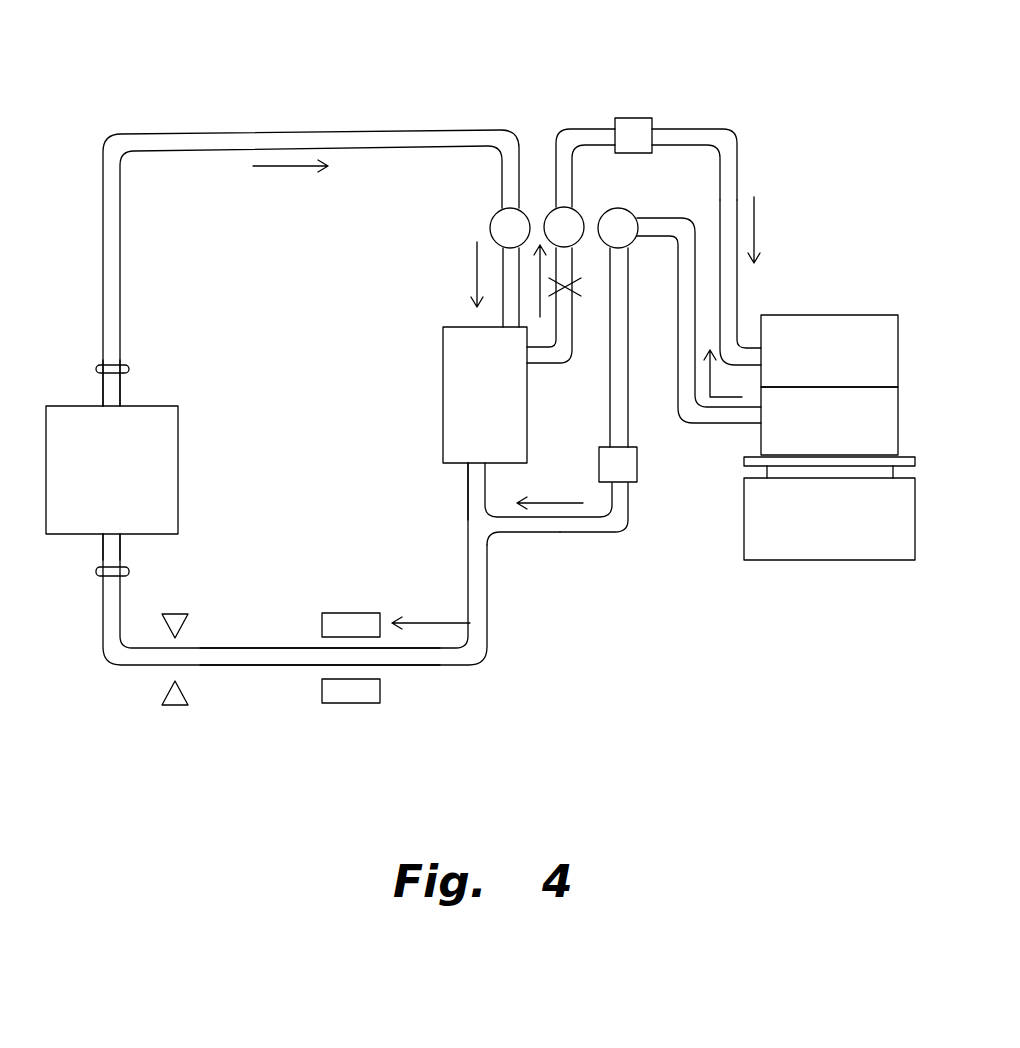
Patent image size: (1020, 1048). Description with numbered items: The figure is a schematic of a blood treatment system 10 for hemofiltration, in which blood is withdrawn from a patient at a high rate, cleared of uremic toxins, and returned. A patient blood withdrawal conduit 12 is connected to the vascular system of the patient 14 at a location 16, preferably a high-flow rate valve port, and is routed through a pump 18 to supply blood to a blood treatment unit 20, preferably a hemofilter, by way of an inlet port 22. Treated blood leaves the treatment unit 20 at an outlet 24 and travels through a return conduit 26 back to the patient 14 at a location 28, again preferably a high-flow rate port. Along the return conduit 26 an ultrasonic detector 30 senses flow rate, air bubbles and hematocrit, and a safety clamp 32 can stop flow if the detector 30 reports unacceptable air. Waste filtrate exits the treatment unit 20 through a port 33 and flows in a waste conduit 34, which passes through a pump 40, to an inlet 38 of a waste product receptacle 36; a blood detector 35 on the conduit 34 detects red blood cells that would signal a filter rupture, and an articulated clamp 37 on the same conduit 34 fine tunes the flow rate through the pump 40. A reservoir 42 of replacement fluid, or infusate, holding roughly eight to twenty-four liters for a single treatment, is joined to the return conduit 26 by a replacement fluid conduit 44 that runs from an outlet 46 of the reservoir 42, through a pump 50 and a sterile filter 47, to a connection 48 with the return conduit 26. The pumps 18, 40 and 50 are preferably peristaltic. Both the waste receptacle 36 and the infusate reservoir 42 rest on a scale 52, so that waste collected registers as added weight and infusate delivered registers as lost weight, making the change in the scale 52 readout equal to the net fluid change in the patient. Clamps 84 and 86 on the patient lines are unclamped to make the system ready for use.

The blood treatment system 10 is at (786, 90).
The patient blood withdrawal conduit 12 is at (297, 130).
The patient 14 is at (116, 487).
The location 16 is at (155, 405).
The pump 18 is at (491, 220).
The blood treatment unit 20 is at (490, 409).
The inlet port 22 is at (503, 326).
The outlet 24 is at (465, 465).
The conduit 26 is at (283, 667).
The location 28 is at (122, 538).
The ultrasonic detector 30 is at (370, 703).
The safety clamp 32 is at (172, 700).
The port 33 is at (528, 366).
The conduit 34 is at (592, 128).
The blood detector 35 is at (636, 118).
The waste product receptacle 36 is at (828, 369).
The articulated clamp 37 is at (578, 296).
The inlet 38 is at (750, 343).
The pump 40 is at (572, 210).
The reservoir 42 is at (830, 435).
The replacement fluid conduit 44 is at (588, 535).
The outlet 46 is at (760, 430).
The sterile filter 47 is at (638, 475).
The connection 48 is at (486, 530).
The pump 50 is at (628, 210).
The scale 52 is at (830, 531).
The clamp 84 is at (100, 364).
The clamp 86 is at (98, 578).